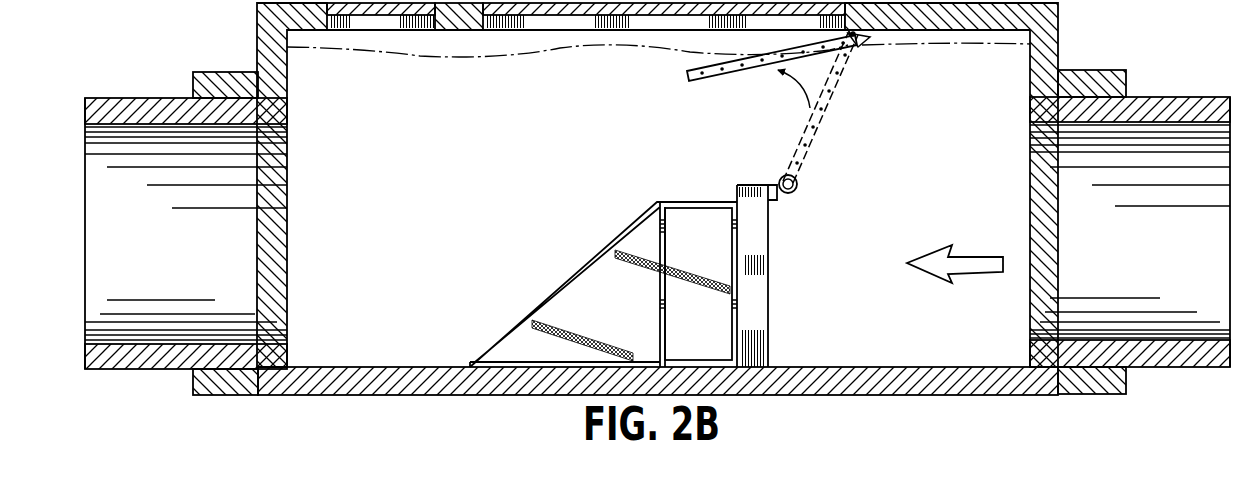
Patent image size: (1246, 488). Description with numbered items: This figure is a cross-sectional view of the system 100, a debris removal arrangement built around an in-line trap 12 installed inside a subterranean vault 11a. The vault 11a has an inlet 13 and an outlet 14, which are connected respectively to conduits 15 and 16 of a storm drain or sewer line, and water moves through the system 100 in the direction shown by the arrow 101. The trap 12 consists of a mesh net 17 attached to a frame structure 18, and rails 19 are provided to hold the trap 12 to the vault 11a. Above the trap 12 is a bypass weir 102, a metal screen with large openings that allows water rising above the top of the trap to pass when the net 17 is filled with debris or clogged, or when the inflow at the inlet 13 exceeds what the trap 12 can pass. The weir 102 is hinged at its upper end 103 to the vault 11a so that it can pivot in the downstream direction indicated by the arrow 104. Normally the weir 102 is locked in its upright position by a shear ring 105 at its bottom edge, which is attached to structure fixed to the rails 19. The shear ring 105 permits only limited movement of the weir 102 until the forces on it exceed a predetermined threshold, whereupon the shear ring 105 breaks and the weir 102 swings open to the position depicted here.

The system 100 is at (71, 36).
The subterranean vault 11a is at (1050, 33).
The in-line trap 12 is at (578, 242).
The inlet 13 is at (1058, 253).
The outlet 14 is at (272, 259).
The conduit 15 is at (1170, 97).
The conduit 16 is at (164, 97).
The mesh net 17 is at (620, 310).
The frame structure 18 is at (670, 200).
The rails 19 is at (763, 296).
The arrow 101 is at (972, 254).
The bypass weir 102 is at (717, 78).
The upper end 103 is at (858, 41).
The arrow 104 is at (810, 108).
The shear ring 105 is at (801, 190).